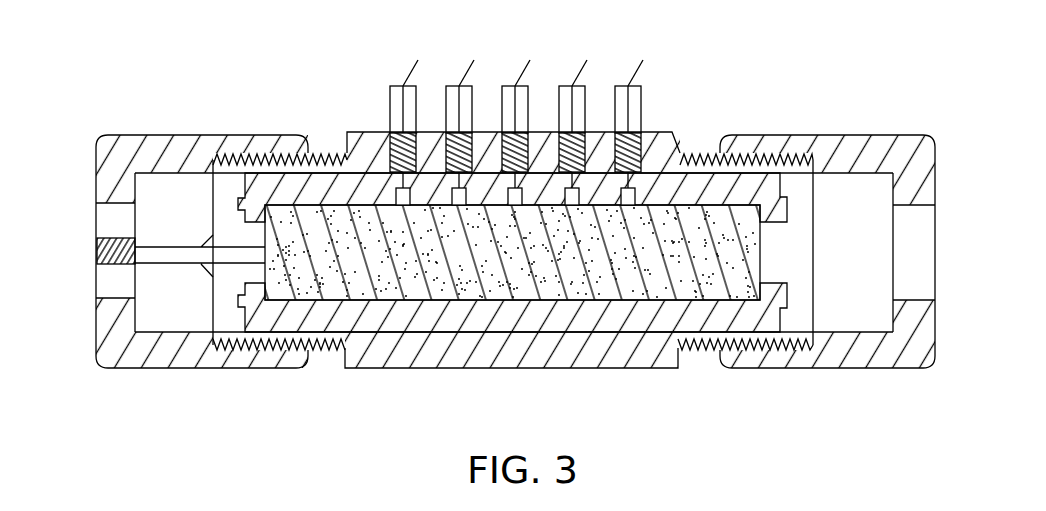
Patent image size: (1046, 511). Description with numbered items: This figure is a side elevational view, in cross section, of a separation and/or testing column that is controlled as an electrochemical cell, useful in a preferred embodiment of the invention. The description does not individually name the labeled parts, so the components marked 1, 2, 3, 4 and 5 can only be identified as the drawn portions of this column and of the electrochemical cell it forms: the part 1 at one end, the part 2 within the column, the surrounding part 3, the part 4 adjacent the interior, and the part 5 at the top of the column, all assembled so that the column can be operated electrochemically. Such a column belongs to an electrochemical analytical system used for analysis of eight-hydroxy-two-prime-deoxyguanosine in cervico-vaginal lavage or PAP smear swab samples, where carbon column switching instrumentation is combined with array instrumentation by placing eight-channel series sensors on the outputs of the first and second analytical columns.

The end cap 1 is at (175, 315).
The sensing core 2 is at (340, 290).
The housing body 3 is at (505, 358).
The inner sleeve 4 is at (680, 323).
The lead wires 5 is at (530, 97).